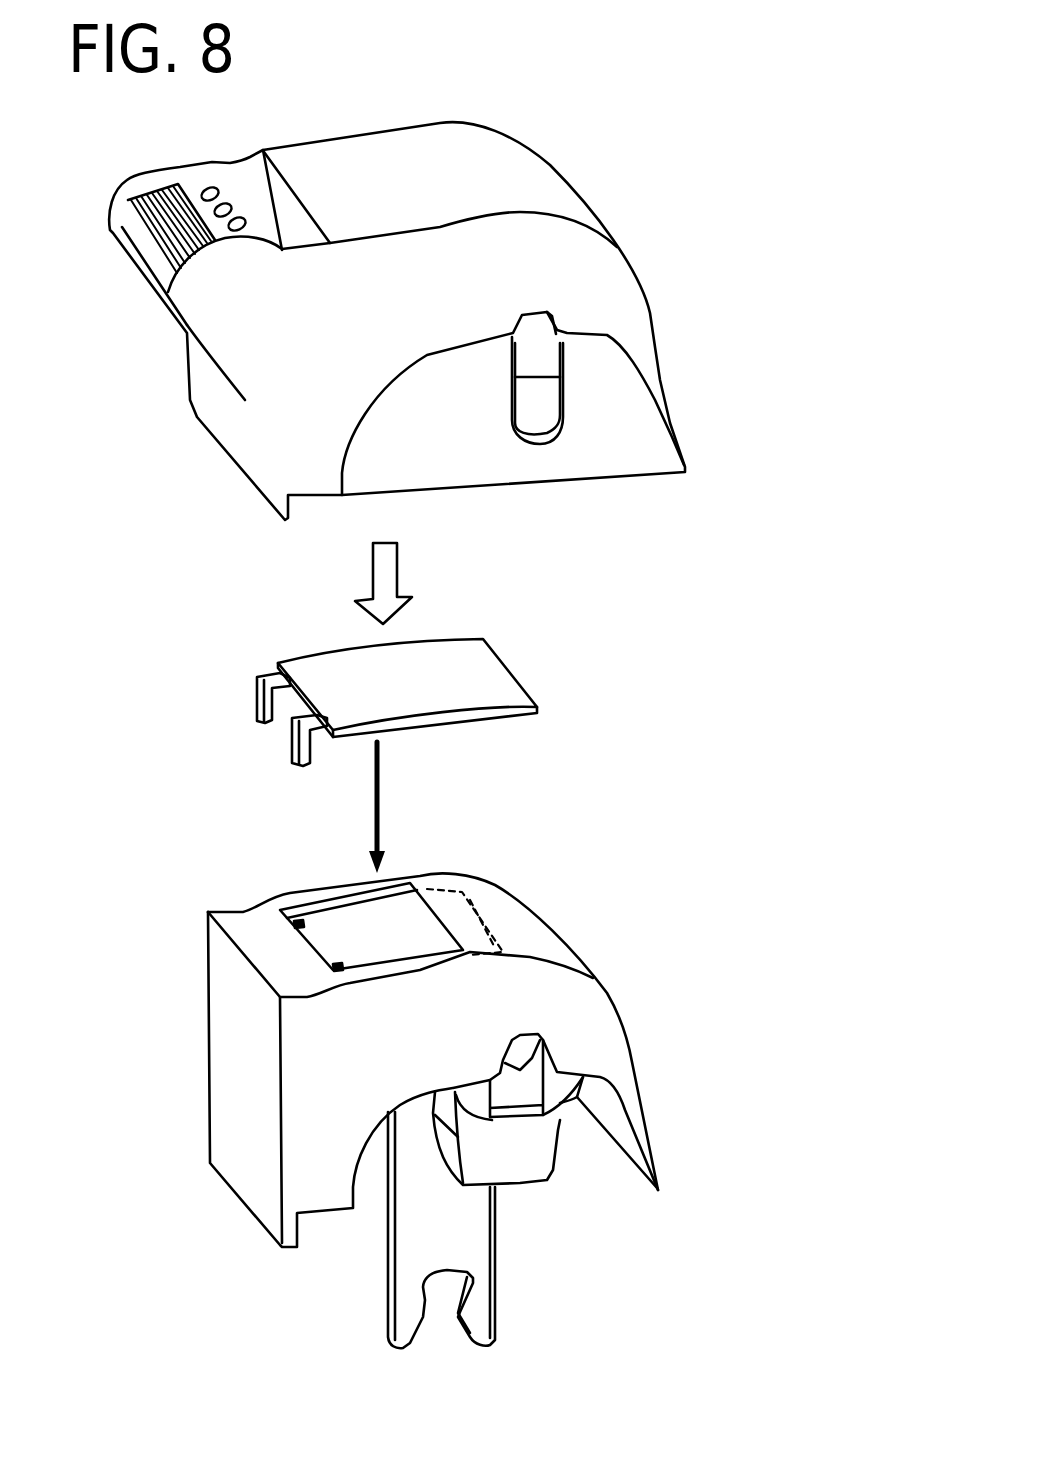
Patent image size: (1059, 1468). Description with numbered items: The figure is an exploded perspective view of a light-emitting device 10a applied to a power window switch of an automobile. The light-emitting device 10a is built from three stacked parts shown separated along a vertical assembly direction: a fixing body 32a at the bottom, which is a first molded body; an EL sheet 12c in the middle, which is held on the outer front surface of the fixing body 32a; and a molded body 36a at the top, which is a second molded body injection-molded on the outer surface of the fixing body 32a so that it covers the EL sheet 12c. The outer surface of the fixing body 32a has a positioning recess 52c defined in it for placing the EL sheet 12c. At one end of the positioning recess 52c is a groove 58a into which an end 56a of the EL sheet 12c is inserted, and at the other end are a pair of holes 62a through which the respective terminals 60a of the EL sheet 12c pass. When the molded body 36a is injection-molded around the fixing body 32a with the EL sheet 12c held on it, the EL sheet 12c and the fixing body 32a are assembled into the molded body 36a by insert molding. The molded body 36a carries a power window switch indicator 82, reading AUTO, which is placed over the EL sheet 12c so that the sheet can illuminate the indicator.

The light-emitting device 10a is at (673, 86).
The molded body 36a is at (616, 222).
The power window switch indicator 82 is at (314, 152).
The EL sheet 12c is at (494, 641).
The end of the EL sheet 56a is at (520, 677).
The terminals 60a is at (292, 746).
The fixing body 32a is at (553, 921).
The positioning recess 52c is at (410, 915).
The holes 62a is at (337, 966).
The groove 58a is at (497, 882).